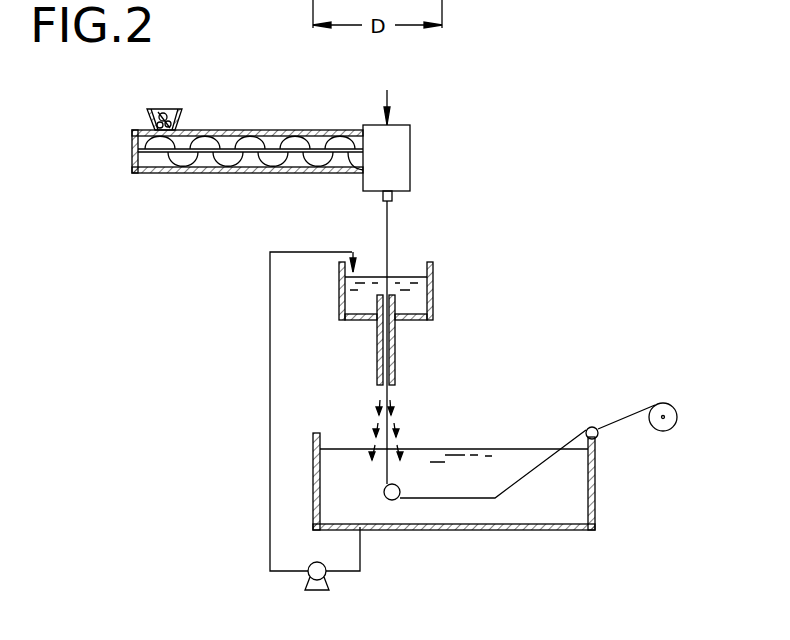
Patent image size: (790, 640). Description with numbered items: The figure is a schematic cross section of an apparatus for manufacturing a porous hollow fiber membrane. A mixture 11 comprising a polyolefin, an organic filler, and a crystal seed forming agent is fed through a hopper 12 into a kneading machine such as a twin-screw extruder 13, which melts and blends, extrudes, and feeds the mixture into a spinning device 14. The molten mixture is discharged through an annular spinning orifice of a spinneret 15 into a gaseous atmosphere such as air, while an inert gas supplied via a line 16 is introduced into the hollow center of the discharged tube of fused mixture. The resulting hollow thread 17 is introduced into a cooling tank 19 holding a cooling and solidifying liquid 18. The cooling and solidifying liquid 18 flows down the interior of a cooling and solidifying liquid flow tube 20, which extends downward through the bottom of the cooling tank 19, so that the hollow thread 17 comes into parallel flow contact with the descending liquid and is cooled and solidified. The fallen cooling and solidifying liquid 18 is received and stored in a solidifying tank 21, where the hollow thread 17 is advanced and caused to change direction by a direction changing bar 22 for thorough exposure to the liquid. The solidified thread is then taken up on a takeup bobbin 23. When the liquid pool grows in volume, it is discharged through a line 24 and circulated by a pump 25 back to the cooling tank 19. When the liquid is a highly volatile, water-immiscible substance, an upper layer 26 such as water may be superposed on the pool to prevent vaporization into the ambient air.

The mixture 11 is at (165, 108).
The hopper 12 is at (147, 118).
The twin-screw extruder 13 is at (188, 160).
The spinning device 14 is at (412, 162).
The spinneret 15 is at (392, 196).
The line 16 is at (387, 92).
The hollow thread 17 is at (390, 243).
The cooling and solidifying liquid 18 is at (350, 293).
The cooling tank 19 is at (433, 292).
The cooling and solidifying liquid flow tube 20 is at (397, 355).
The solidifying tank 21 is at (596, 500).
The direction changing bar 22 is at (393, 500).
The takeup bobbin 23 is at (663, 432).
The line 24 is at (340, 580).
The pump 25 is at (317, 562).
The upper layer 26 is at (520, 450).